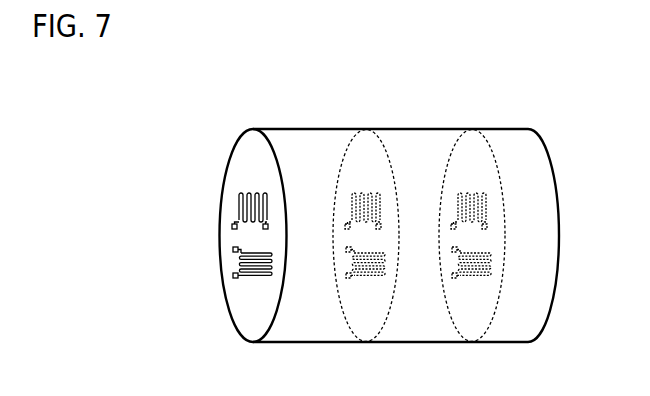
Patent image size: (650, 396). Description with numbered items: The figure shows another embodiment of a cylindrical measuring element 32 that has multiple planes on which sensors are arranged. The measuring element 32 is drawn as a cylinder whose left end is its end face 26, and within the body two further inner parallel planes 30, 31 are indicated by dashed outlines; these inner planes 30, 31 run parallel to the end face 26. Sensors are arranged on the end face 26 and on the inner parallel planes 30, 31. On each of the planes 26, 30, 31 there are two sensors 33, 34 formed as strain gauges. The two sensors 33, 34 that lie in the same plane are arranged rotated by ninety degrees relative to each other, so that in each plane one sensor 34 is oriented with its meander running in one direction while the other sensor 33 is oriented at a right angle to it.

The measuring element 32 is at (160, 149).
The end face 26 is at (248, 147).
The inner parallel plane 30 is at (363, 145).
The inner parallel plane 31 is at (468, 152).
The sensor 34 is at (238, 213).
The sensor 33 is at (252, 278).